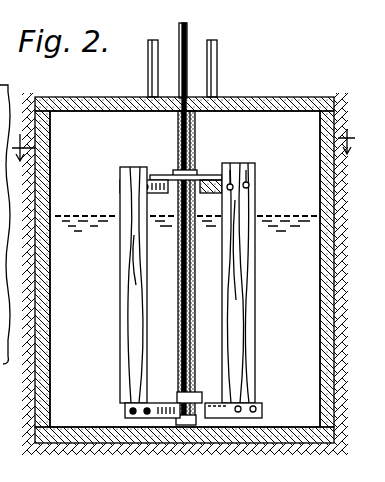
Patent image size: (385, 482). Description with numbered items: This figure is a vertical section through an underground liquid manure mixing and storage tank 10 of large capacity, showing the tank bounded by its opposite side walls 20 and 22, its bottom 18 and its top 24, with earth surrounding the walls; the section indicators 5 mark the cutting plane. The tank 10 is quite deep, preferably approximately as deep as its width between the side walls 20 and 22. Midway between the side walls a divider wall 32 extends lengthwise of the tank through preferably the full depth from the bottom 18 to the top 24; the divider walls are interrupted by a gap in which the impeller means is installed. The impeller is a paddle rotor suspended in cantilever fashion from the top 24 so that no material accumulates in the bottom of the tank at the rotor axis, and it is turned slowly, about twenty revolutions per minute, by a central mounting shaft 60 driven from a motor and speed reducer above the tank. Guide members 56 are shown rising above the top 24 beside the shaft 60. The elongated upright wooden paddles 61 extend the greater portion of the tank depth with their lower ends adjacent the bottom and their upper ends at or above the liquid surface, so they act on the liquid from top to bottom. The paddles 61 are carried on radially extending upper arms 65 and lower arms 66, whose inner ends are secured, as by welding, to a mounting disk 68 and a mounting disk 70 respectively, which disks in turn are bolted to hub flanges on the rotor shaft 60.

The section line 5- 5 is at (184, 138).
The liquid manure mixing and storage tank 10 is at (271, 92).
The bottom 18 is at (96, 427).
The side wall 20 is at (320, 139).
The side wall 22 is at (50, 158).
The top 24 is at (98, 113).
The divider walls 32 is at (196, 146).
The guide rods 56 is at (148, 66).
The central mounting shaft 60 is at (188, 32).
The paddles 61 is at (128, 287).
The upper arms 65 is at (120, 192).
The lower arms 66 is at (224, 410).
The mounting disk 68 is at (167, 178).
The mounting disk 70 is at (172, 400).